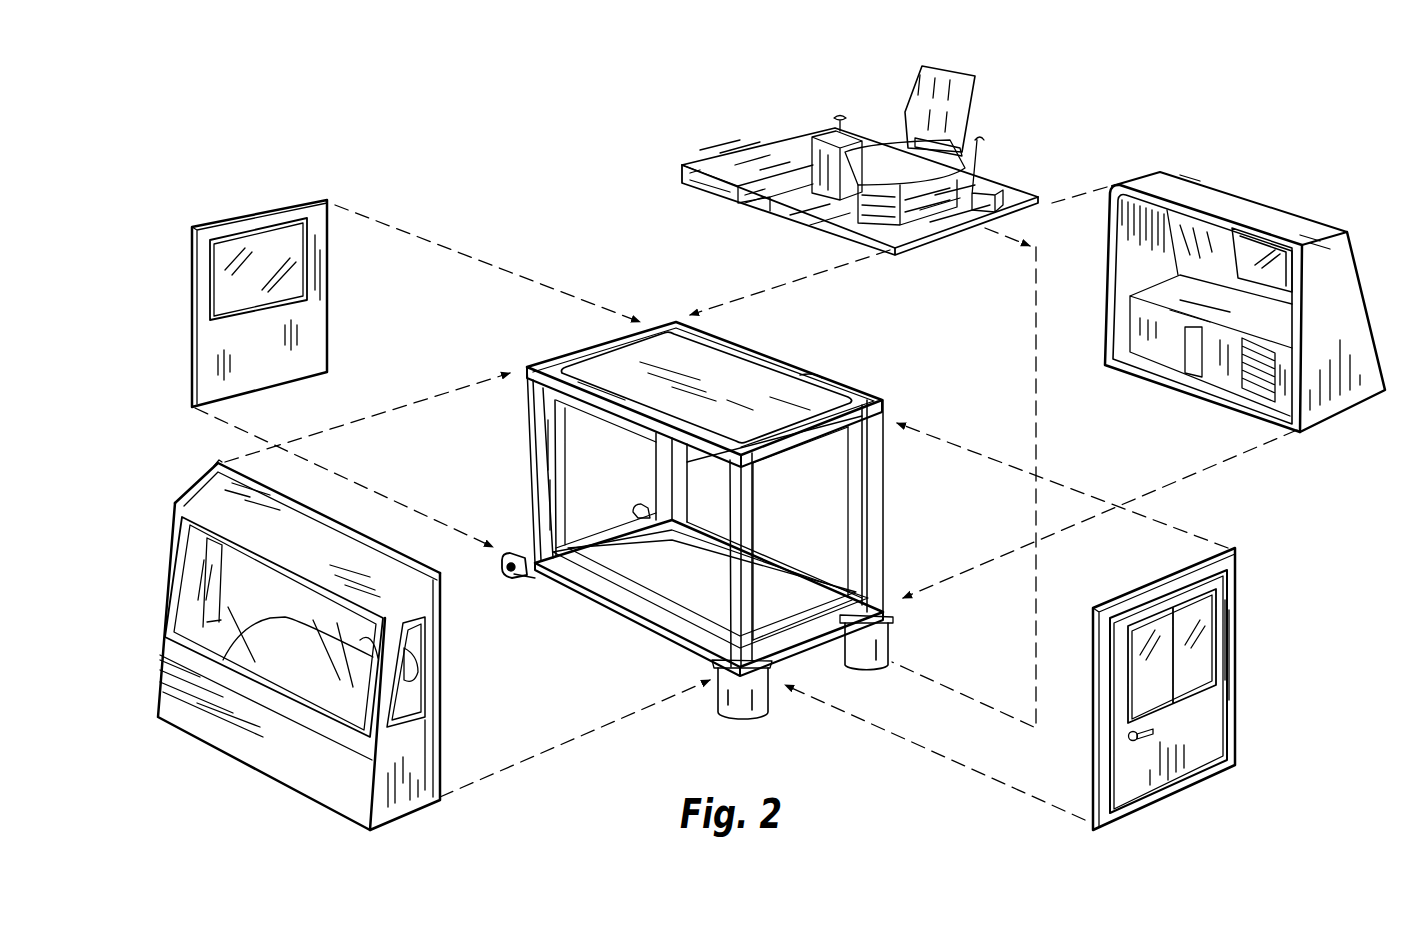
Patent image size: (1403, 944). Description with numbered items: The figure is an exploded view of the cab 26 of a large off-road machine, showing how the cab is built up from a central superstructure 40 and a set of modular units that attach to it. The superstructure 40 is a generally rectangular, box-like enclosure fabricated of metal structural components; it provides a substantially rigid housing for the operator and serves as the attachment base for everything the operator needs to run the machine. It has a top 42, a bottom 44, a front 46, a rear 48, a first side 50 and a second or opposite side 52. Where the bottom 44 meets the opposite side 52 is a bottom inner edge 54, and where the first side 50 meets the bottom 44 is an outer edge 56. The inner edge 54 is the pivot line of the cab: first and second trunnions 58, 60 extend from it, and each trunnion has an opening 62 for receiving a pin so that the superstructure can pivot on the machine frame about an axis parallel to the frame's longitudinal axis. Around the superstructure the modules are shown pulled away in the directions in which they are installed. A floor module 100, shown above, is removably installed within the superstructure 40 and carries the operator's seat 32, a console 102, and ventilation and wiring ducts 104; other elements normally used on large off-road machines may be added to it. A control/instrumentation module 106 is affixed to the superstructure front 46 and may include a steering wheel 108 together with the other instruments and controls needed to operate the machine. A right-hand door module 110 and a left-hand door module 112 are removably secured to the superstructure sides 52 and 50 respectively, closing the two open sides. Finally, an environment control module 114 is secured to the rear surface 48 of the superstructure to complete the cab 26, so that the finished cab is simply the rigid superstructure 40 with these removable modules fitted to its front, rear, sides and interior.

The cab 26 is at (1148, 152).
The seat 32 is at (950, 72).
The superstructure 40 is at (878, 355).
The top 42 is at (740, 350).
The bottom 44 is at (657, 633).
The front 46 is at (585, 390).
The rear 48 is at (807, 377).
The first side 50 is at (877, 495).
The second or opposite side 52 is at (520, 473).
The bottom inner edge 54 is at (522, 580).
The outer edge 56 is at (813, 630).
The first trunnion 58 is at (643, 508).
The second trunnion 60 is at (507, 558).
The opening 62 is at (505, 578).
The floor module 100 is at (1032, 128).
The console 102 is at (850, 130).
The ventilation and wiring ducts 104 is at (733, 150).
The control/instrumentation module 106 is at (247, 817).
The steering wheel 108 is at (417, 668).
The right-hand door module 110 is at (317, 333).
The left-hand door module 112 is at (1217, 720).
The environment control module 114 is at (1318, 185).